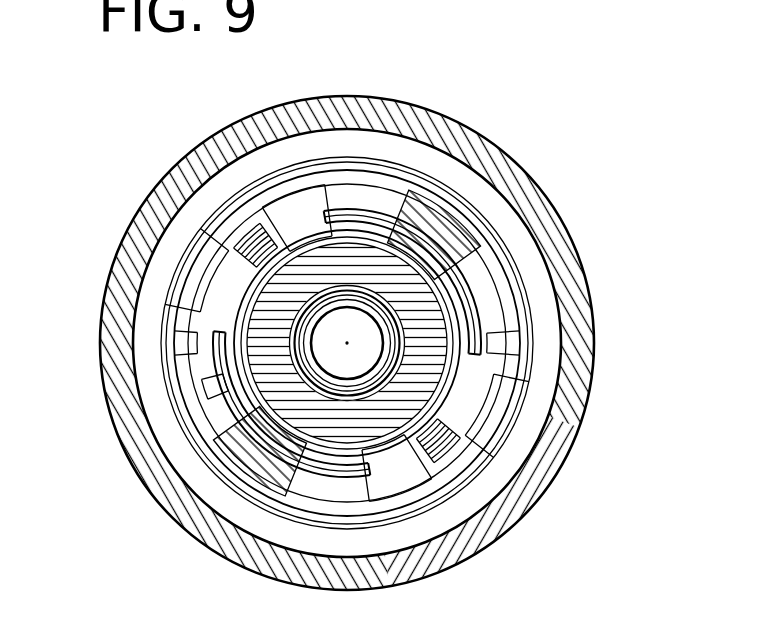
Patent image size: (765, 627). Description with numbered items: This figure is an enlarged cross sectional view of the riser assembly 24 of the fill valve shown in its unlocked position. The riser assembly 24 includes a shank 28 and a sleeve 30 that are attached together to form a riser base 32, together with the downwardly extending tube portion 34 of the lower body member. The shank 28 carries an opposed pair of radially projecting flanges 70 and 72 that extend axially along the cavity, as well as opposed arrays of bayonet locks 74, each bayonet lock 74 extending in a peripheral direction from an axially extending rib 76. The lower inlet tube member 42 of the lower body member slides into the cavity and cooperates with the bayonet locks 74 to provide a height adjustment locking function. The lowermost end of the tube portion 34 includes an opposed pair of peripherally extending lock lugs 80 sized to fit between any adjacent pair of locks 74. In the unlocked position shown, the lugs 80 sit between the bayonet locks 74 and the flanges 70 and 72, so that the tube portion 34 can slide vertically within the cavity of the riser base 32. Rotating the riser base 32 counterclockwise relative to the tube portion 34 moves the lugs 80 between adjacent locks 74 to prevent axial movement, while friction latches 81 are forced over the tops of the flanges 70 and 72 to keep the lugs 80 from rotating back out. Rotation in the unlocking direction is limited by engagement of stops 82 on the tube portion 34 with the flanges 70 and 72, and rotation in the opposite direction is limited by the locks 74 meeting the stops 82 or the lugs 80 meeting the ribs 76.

The riser assembly 24 is at (588, 186).
The shank 28 is at (262, 327).
The sleeve 30 is at (592, 412).
The riser base 32 is at (190, 528).
The tube portion 34 is at (522, 470).
The inlet tube member 42 is at (400, 353).
The flange 70 is at (512, 285).
The flange 72 is at (215, 388).
The bayonet lock 74 is at (283, 237).
The rib 76 is at (340, 205).
The lock lug 80 is at (233, 278).
The friction latch 81 is at (460, 240).
The stop 82 is at (162, 345).